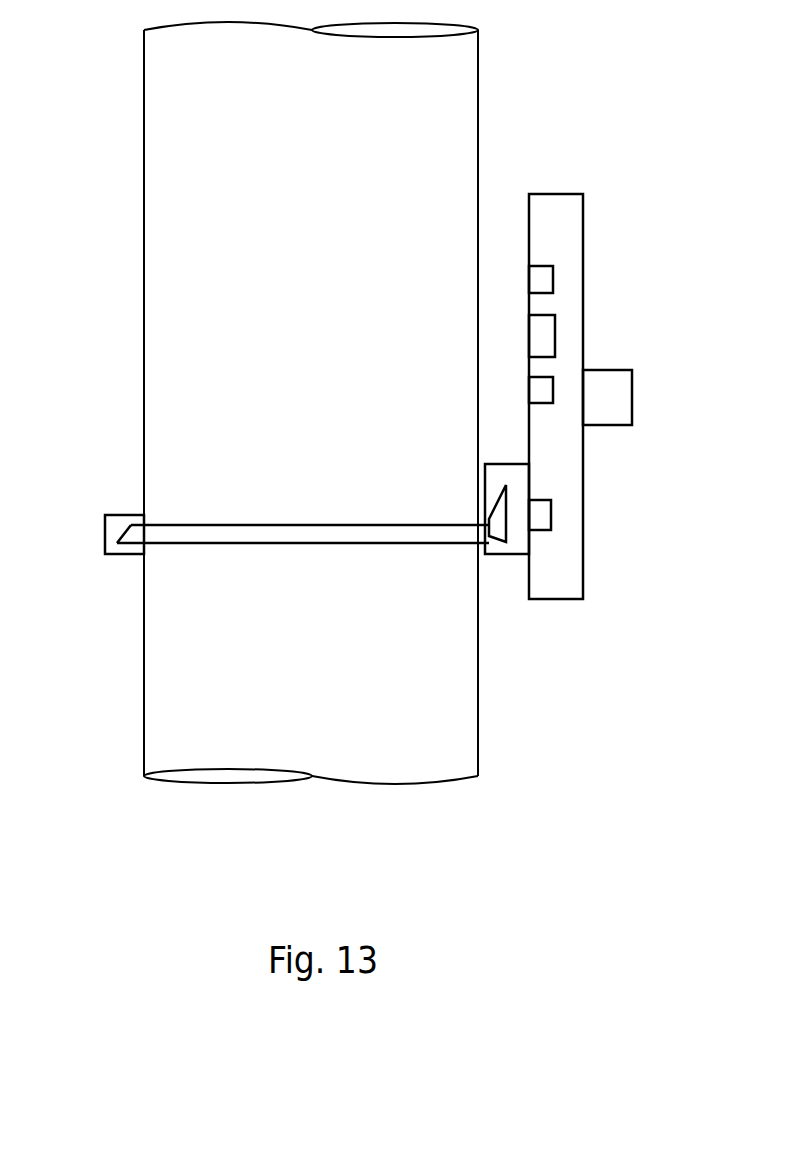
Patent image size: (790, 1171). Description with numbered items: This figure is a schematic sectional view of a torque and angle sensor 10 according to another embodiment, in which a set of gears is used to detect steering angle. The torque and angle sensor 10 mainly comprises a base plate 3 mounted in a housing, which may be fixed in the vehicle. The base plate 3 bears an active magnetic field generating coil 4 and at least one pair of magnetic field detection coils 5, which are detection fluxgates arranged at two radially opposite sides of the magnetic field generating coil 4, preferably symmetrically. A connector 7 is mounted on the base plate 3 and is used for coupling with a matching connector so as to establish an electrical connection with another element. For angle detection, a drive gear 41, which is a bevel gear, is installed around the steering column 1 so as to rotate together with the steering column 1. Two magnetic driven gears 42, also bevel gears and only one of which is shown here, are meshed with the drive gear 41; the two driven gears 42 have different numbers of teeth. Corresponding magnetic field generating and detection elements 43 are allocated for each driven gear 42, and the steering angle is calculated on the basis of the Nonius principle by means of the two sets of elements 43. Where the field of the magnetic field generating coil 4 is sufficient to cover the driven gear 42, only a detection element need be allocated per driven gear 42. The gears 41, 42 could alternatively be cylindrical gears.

The steering column 1 is at (144, 133).
The torque and angle sensor 10 is at (592, 195).
The base plate 3 is at (578, 480).
The active magnetic field generating coil 4 is at (549, 337).
The magnetic field detection coils 5 is at (545, 282).
The connector 7 is at (622, 407).
The drive gear 41 is at (356, 531).
The magnetic driven gear 42 is at (497, 503).
The magnetic field generating and detection elements 43 is at (546, 517).